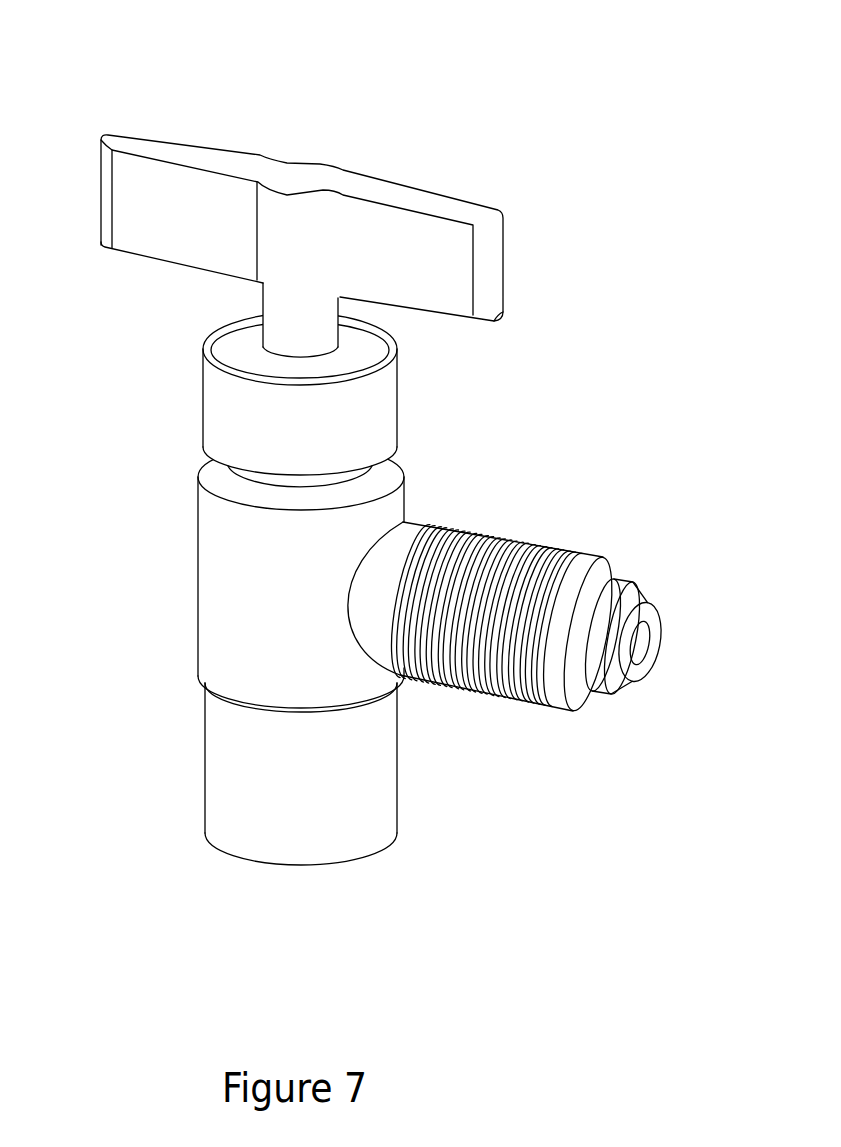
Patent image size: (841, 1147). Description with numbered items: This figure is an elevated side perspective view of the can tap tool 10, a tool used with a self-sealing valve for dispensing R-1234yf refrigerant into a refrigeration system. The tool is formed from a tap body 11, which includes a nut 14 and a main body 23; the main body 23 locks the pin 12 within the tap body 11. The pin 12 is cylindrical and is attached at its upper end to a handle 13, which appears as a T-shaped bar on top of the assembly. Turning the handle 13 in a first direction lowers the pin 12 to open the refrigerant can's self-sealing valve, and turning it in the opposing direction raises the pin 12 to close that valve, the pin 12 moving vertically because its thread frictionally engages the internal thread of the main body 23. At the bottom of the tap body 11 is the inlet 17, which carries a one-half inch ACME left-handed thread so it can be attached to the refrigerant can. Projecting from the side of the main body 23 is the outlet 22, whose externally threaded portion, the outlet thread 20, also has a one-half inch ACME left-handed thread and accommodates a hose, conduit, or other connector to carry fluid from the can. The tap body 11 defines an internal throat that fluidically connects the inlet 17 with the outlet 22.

The can tap tool 10 is at (373, 472).
The tap body 11 is at (197, 617).
The pin 12 is at (263, 312).
The handle 13 is at (232, 158).
The nut 14 is at (203, 423).
The inlet 17 is at (343, 863).
The outlet thread 20 is at (483, 532).
The outlet 22 is at (642, 642).
The main body 23 is at (215, 659).